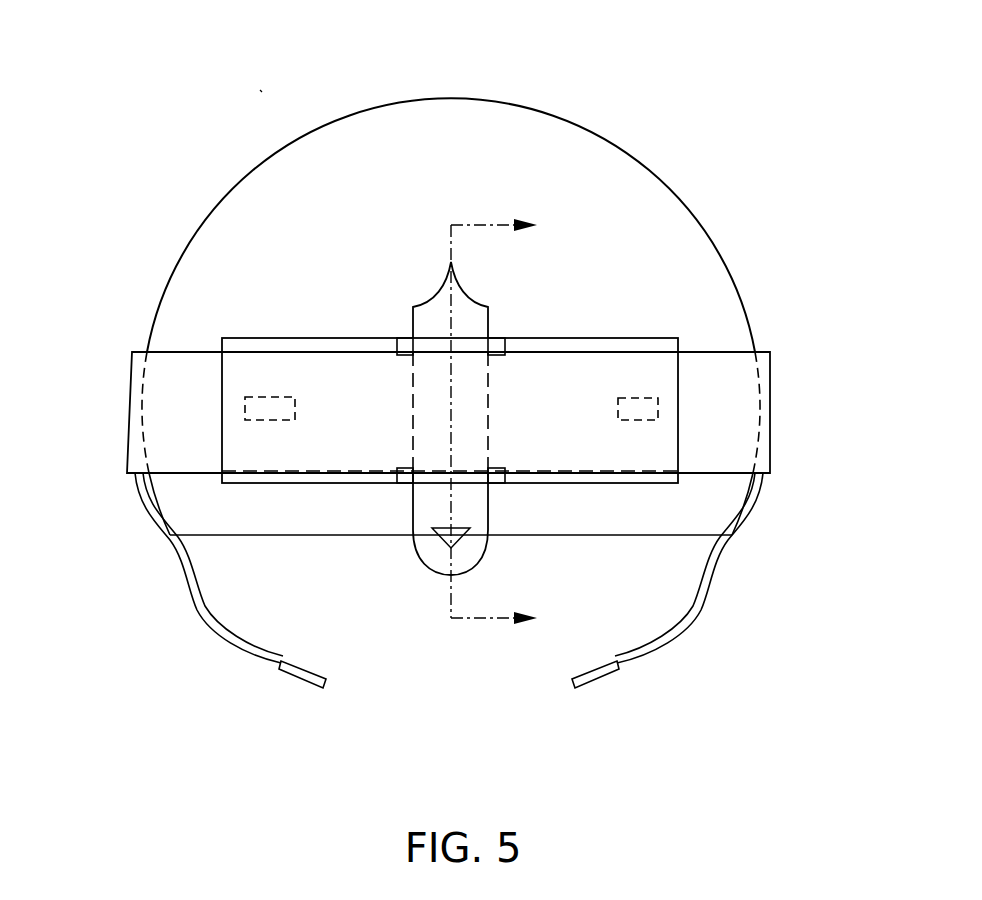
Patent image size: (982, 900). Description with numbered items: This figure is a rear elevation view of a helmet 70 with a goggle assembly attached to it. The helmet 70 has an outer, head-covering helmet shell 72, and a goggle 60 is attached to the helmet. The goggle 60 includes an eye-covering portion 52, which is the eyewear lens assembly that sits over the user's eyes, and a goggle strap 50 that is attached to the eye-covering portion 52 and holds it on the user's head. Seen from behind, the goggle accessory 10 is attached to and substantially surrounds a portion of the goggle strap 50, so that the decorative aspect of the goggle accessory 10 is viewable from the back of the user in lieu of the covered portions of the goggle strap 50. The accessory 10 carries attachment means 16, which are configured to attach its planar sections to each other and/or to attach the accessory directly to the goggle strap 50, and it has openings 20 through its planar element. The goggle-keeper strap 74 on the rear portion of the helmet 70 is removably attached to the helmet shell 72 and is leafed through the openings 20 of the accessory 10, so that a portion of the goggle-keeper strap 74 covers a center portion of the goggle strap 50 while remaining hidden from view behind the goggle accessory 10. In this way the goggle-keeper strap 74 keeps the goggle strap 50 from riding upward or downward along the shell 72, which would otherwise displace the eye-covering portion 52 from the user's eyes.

The goggle accessory 10 is at (312, 505).
The attachment means 16 is at (258, 406).
The openings 20 is at (490, 356).
The goggle strap 50 is at (725, 418).
The eye-covering portion 52 is at (772, 298).
The goggle 60 is at (124, 351).
The helmet 70 is at (265, 92).
The helmet shell 72 is at (530, 145).
The goggle-keeper strap 74 is at (472, 322).